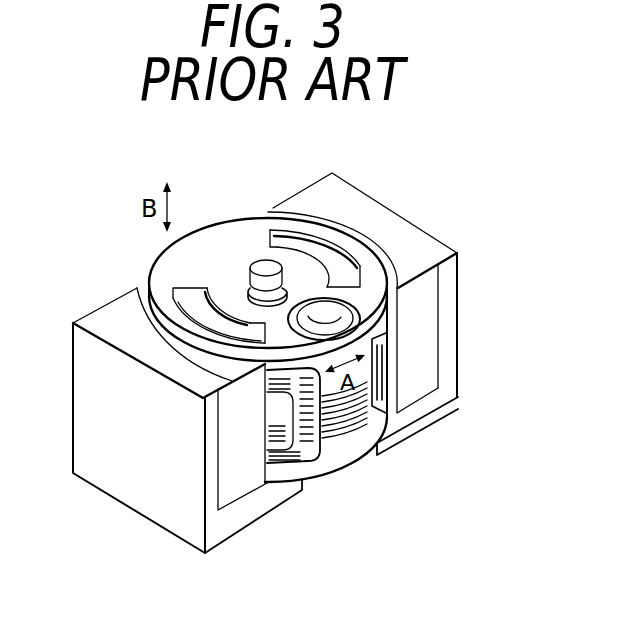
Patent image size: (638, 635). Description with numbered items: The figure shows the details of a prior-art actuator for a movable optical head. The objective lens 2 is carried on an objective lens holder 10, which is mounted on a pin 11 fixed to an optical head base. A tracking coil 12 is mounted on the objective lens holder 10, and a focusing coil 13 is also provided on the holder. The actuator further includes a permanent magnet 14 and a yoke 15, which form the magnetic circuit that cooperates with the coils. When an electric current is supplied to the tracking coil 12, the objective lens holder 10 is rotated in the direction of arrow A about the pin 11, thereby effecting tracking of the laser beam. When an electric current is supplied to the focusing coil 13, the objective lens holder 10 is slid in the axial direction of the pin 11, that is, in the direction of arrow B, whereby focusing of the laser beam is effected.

The objective lens 2 is at (347, 320).
The objective lens holder 10 is at (203, 243).
The pin 11 is at (262, 273).
The tracking coil 12 is at (307, 457).
The focusing coil 13 is at (345, 437).
The permanent magnet 14 is at (427, 287).
The yoke 15 is at (130, 345).